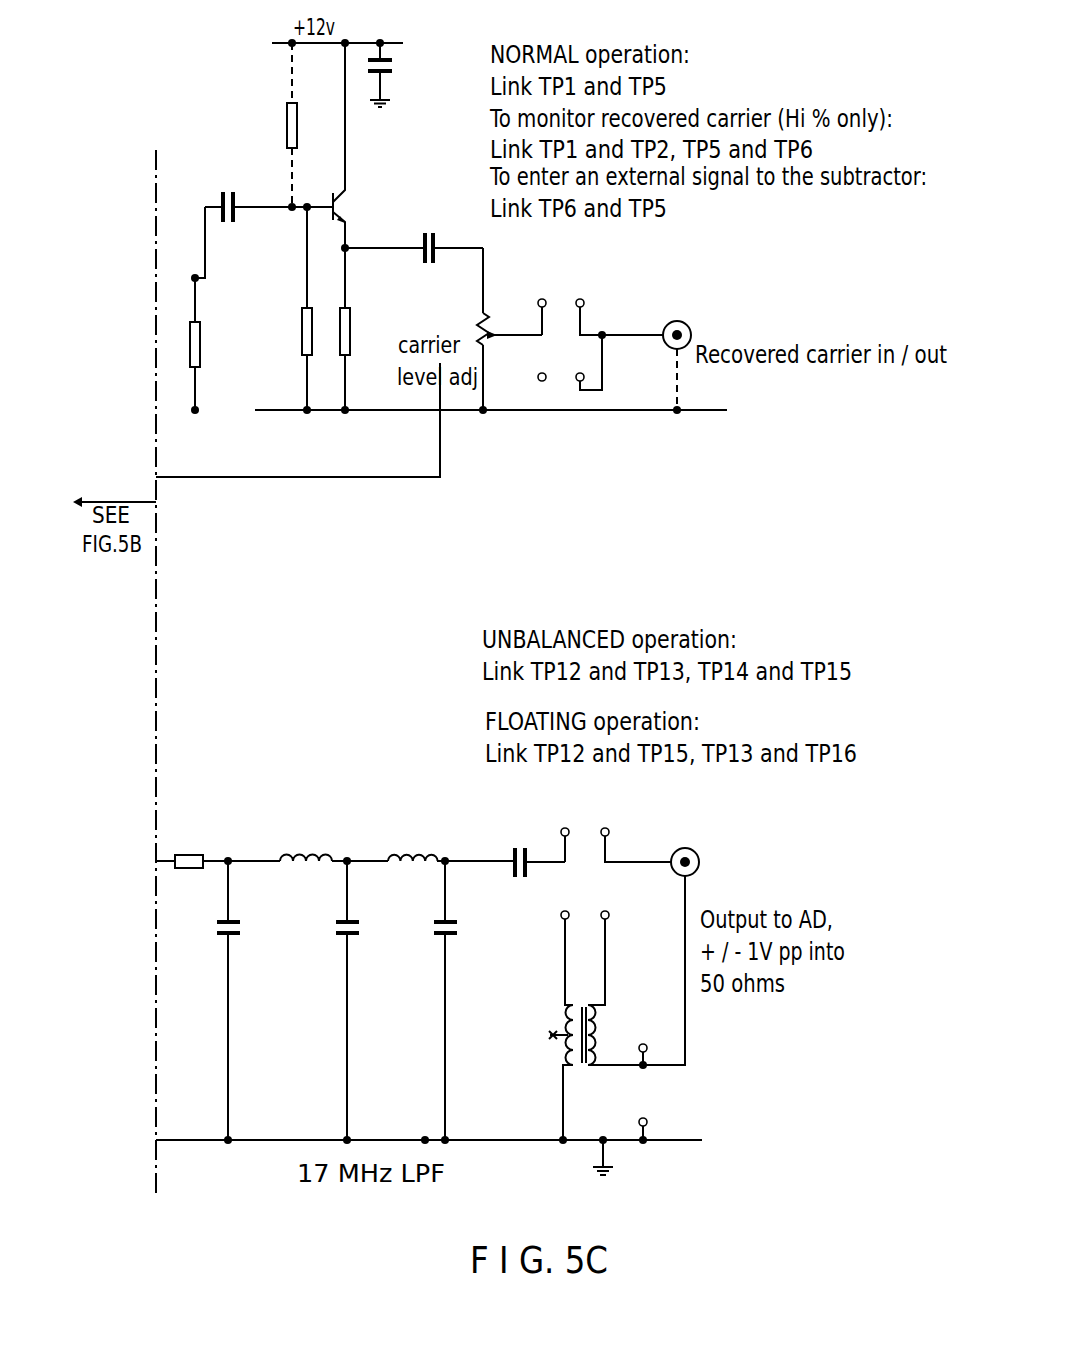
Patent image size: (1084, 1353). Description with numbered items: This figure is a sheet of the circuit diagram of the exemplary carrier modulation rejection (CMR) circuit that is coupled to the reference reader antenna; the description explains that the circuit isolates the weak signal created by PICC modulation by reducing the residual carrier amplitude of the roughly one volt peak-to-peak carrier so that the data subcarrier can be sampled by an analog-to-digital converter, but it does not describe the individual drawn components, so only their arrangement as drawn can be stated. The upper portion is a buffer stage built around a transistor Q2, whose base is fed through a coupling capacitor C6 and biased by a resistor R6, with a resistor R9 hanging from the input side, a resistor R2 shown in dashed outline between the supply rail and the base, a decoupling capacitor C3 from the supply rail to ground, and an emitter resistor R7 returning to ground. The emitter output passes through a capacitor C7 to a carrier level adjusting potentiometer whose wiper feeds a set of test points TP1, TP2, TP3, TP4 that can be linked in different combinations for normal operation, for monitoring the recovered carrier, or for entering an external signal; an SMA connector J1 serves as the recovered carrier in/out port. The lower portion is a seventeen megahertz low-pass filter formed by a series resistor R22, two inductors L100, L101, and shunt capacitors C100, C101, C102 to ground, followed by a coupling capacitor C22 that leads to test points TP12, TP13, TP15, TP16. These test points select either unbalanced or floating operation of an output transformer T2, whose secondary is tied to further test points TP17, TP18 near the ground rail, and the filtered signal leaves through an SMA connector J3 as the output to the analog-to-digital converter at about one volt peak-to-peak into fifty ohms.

The decoupling capacitor C3 is at (395, 75).
The collector resistor R2 is at (308, 125).
The coupling capacitor C6 is at (269, 193).
The resistor R9 is at (211, 344).
The buffer transistor Q2 is at (392, 145).
The base bias resistor R6 is at (292, 308).
The emitter resistor R7 is at (360, 329).
The coupling capacitor C7 is at (414, 234).
The test point 1 TP1 is at (538, 303).
The test point 2 TP2 is at (615, 305).
The test point 3 TP3 is at (538, 362).
The test point 4 TP4 is at (584, 362).
The SMA connector (recovered carrier in/out) J1 is at (676, 340).
The series resistor R22 is at (218, 877).
The LPF inductor L100 is at (334, 840).
The LPF inductor L101 is at (451, 840).
The LPF capacitor C100 is at (209, 1000).
The LPF capacitor C101 is at (367, 1000).
The LPF capacitor C102 is at (466, 1000).
The coupling capacitor C22 is at (531, 848).
The test point 12 TP12 is at (554, 828).
The test point 13 TP13 is at (628, 828).
The test point 15 TP15 is at (554, 943).
The test point 16 TP16 is at (612, 943).
The SMA output connector J3 is at (646, 933).
The output transformer T2 is at (578, 1058).
The test point 17 TP17 is at (645, 1038).
The test point 18 TP18 is at (642, 1115).